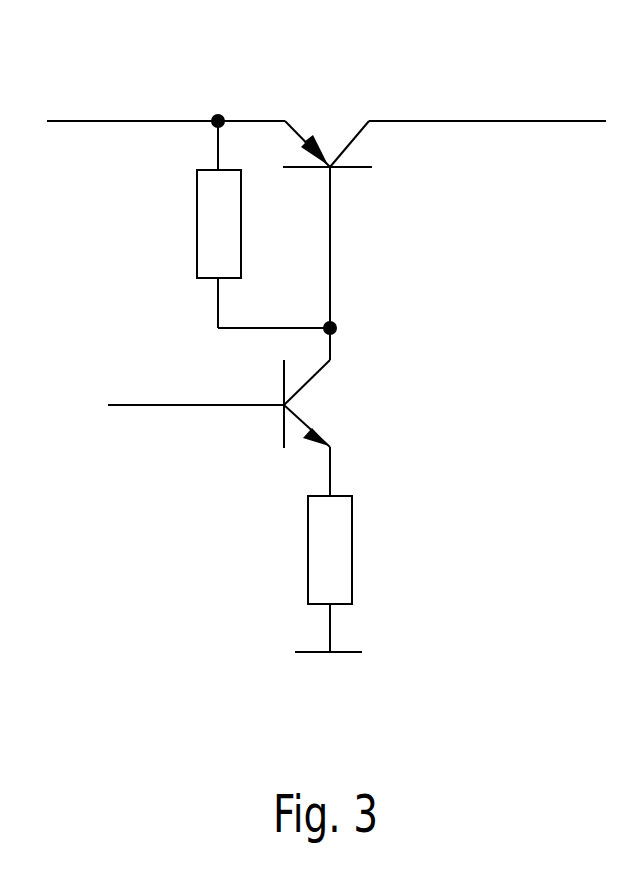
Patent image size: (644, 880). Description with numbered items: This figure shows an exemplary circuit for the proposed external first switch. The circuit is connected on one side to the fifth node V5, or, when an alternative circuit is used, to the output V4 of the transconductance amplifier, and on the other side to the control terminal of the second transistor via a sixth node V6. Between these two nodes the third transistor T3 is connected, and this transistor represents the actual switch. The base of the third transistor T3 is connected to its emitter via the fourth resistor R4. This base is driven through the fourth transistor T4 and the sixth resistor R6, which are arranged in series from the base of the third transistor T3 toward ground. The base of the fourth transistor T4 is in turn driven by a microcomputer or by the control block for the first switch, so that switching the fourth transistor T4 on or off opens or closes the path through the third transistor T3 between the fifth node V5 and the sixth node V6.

The output of the transconductance amplifier V4 is at (95, 72).
The fifth node V5 is at (166, 98).
The sixth node V6 is at (491, 96).
The third transistor T3 is at (327, 214).
The fourth transistor T4 is at (243, 404).
The fourth resistor R4 is at (237, 227).
The sixth resistor R6 is at (353, 549).